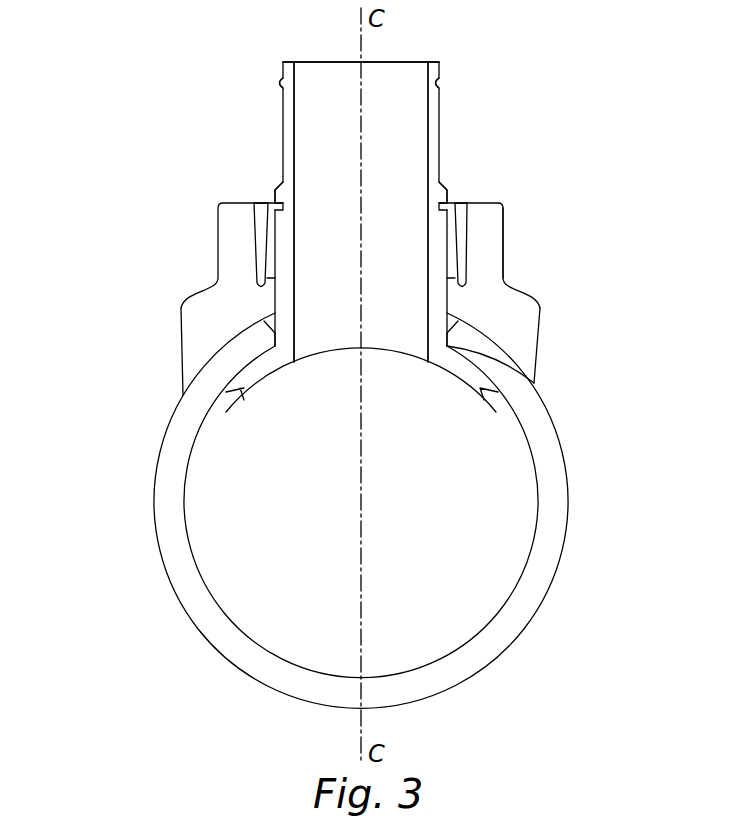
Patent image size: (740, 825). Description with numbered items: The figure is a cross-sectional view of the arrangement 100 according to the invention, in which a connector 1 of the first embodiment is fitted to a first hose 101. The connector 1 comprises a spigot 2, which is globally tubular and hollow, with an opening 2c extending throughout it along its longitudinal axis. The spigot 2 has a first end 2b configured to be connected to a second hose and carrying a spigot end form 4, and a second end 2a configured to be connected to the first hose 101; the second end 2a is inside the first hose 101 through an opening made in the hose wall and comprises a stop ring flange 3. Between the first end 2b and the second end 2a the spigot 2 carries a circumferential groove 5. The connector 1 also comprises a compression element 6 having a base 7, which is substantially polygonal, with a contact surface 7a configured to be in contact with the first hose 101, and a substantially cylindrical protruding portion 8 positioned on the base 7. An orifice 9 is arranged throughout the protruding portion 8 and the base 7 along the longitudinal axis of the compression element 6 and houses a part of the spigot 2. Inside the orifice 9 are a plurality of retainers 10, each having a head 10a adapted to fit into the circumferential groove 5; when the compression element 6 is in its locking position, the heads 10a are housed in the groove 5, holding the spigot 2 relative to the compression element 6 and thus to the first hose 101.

The connector 1 is at (82, 306).
The spigot 2 is at (323, 110).
The second end of the spigot 2a is at (240, 408).
The first end of the spigot 2b is at (452, 66).
The opening of the spigot 2c is at (397, 77).
The stop ring flange 3 is at (480, 390).
The spigot end form 4 is at (442, 84).
The circumferential groove 5 is at (448, 193).
The compression element 6 is at (562, 318).
The base 7 is at (520, 355).
The contact surface 7a is at (535, 377).
The protruding portion 8 is at (483, 252).
The orifice 9 is at (273, 200).
The retainer 10 is at (270, 245).
The head of the retainer 10a is at (252, 203).
The arrangement 100 is at (132, 597).
The first hose 101 is at (541, 571).